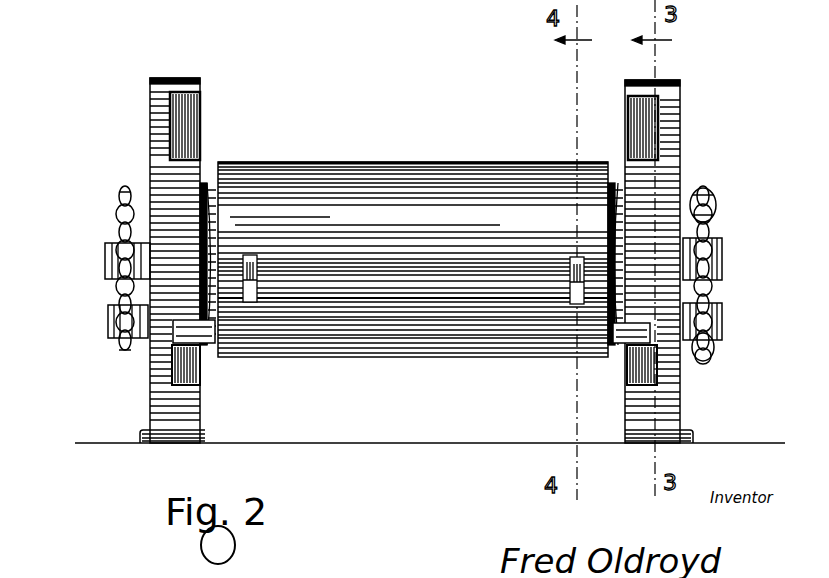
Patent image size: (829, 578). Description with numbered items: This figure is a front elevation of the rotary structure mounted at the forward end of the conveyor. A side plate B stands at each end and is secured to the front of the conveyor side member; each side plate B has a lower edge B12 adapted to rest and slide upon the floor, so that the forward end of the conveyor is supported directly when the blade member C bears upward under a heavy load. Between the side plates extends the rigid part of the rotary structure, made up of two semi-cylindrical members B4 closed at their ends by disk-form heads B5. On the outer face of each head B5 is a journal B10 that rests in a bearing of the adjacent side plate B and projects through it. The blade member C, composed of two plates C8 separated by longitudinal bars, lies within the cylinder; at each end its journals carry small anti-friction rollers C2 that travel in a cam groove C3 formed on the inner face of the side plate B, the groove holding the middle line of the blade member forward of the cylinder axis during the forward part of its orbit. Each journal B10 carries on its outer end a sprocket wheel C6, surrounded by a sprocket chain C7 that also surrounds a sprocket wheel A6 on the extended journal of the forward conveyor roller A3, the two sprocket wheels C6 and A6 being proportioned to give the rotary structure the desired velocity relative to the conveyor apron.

The side plate B is at (150, 110).
The cam groove C3 is at (203, 108).
The semi-cylindrical member B4 is at (375, 160).
The disk-form head B5 is at (209, 182).
The blade member C is at (413, 342).
The plate C8 is at (308, 316).
The anti-friction roller C2 is at (172, 338).
The sprocket wheel C6 is at (115, 225).
The sprocket chain C7 is at (714, 212).
The journal B10 is at (108, 262).
The forward roller A3 is at (110, 318).
The sprocket wheel A6 is at (715, 340).
The lower edge B12 is at (158, 445).